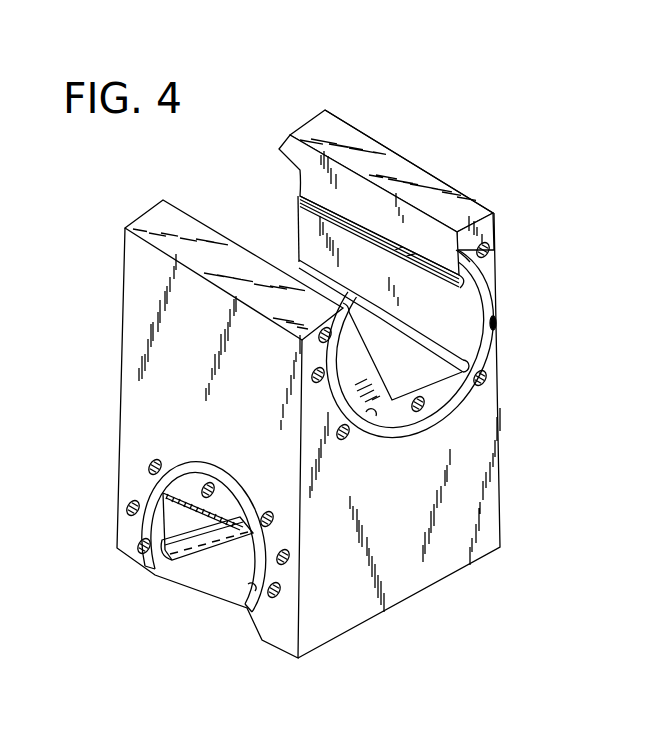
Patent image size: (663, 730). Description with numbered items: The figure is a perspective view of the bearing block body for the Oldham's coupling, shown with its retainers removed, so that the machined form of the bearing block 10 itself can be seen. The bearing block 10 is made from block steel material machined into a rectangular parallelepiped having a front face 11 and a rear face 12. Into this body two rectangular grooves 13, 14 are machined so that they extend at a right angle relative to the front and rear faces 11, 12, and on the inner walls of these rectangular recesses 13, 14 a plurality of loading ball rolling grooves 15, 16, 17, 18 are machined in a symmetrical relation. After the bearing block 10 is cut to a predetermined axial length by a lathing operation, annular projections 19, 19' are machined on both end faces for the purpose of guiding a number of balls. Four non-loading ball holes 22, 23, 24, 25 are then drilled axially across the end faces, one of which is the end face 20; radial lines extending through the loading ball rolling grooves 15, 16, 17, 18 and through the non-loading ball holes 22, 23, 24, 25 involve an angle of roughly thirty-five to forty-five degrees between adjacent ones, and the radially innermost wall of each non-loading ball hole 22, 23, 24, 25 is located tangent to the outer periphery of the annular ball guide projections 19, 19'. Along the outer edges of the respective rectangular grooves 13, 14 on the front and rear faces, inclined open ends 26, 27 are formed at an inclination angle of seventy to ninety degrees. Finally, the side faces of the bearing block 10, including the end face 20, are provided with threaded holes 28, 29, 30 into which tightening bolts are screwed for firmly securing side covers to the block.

The bearing block 10 is at (399, 138).
The front face 11 is at (392, 167).
The rear face 12 is at (273, 650).
The rectangular groove 13 is at (392, 402).
The rectangular groove 14 is at (215, 532).
The loading ball rolling groove 15 is at (352, 343).
The loading ball rolling groove 16 is at (393, 388).
The loading ball rolling groove 17 is at (460, 268).
The loading ball rolling groove 18 is at (415, 337).
The annular projection 19 is at (238, 447).
The annular projection 19' is at (427, 452).
The end face 20 is at (138, 323).
The non-loading ball hole 22 is at (320, 328).
The non-loading ball hole 23 is at (336, 428).
The non-loading ball hole 24 is at (490, 250).
The non-loading ball hole 25 is at (487, 378).
The inclined open end 26 is at (352, 310).
The inclined open end 27 is at (422, 226).
The threaded hole 28 is at (497, 323).
The threaded hole 29 is at (425, 409).
The threaded hole 30 is at (312, 375).